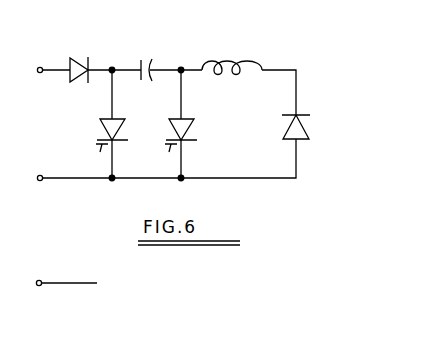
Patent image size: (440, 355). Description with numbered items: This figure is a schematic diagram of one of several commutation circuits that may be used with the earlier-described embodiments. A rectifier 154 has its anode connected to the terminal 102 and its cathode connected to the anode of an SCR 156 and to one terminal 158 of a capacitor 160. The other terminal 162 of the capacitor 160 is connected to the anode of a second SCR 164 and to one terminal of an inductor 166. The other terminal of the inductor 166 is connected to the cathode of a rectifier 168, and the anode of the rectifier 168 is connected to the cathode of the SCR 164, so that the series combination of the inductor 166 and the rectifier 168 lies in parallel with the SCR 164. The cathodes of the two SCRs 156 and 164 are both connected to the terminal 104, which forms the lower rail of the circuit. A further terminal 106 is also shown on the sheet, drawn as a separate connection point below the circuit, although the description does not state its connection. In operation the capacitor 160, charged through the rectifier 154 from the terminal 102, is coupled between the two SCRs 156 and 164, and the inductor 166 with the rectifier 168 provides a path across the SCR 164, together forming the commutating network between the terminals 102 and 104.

The terminal 102 is at (40, 73).
The terminal 104 is at (40, 181).
The terminal 106 is at (39, 286).
The rectifier 154 is at (75, 58).
The SCR 156 is at (102, 128).
The terminal of capacitor 158 is at (142, 62).
The capacitor 160 is at (149, 90).
The terminal of capacitor 162 is at (152, 63).
The SCR 164 is at (190, 128).
The inductor 166 is at (214, 75).
The rectifier 168 is at (310, 130).